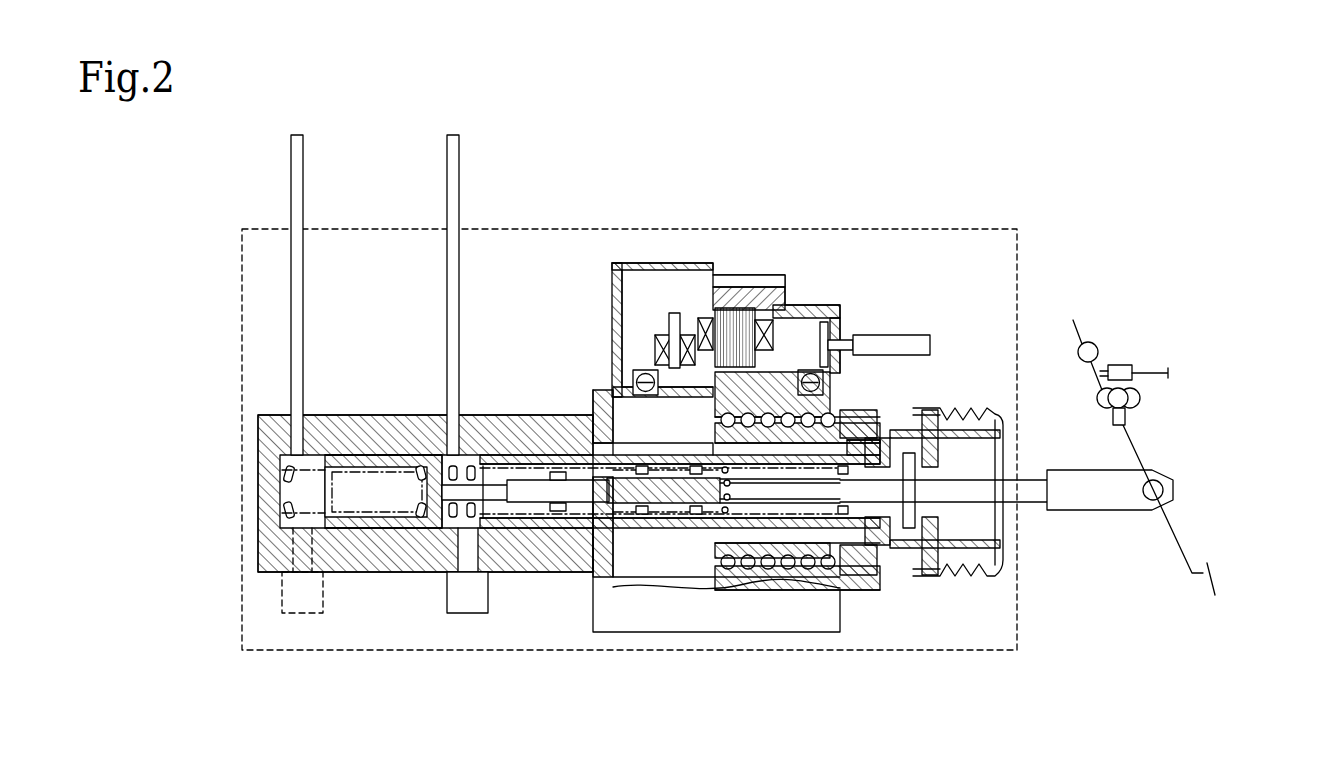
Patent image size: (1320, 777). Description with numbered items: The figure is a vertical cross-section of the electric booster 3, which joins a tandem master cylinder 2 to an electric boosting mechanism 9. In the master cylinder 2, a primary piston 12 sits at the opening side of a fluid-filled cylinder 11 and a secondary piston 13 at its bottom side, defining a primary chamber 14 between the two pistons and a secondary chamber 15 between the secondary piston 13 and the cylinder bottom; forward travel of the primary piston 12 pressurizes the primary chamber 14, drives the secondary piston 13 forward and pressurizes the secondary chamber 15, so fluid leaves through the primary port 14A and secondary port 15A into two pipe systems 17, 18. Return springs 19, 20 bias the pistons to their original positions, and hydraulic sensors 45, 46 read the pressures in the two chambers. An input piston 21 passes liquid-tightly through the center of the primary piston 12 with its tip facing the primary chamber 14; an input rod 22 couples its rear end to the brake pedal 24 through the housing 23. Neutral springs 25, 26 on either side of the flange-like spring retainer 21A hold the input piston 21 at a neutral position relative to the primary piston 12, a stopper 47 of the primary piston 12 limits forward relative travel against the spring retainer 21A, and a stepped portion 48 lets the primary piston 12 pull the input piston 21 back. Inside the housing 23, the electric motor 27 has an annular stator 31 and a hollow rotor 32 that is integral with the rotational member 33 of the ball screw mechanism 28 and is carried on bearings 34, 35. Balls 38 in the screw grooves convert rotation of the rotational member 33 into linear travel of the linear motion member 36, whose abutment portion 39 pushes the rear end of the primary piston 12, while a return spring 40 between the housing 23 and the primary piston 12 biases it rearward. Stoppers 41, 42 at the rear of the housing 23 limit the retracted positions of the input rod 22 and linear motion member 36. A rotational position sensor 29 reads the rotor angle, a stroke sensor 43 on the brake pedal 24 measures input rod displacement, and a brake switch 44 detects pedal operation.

The master cylinder 2 is at (380, 410).
The electric booster 3 is at (795, 226).
The electric boosting mechanism 9 is at (677, 262).
The cylinder 11 is at (513, 431).
The primary piston 12 is at (562, 540).
The secondary piston 13 is at (440, 526).
The primary chamber 14 is at (510, 535).
The primary port 14A is at (477, 456).
The secondary chamber 15 is at (352, 530).
The secondary port 15A is at (296, 440).
The pipe system 17 is at (447, 175).
The pipe system 18 is at (291, 163).
The return spring 19 is at (483, 470).
The return spring 20 is at (285, 466).
The input piston 21 is at (688, 520).
The spring retainer 21A is at (693, 520).
The input rod 22 is at (968, 490).
The housing 23 is at (800, 385).
The brake pedal 24 is at (1203, 575).
The neutral spring 25 is at (628, 522).
The neutral spring 26 is at (760, 542).
The electric motor 27 is at (736, 268).
The ball screw mechanism 28 is at (840, 407).
The rotational position sensor 29 is at (669, 330).
The stator 31 is at (756, 287).
The rotor 32 is at (742, 310).
The rotational member 33 is at (773, 335).
The bearing 34 is at (640, 375).
The bearing 35 is at (830, 395).
The linear motion member 36 is at (855, 430).
The balls 38 is at (870, 430).
The abutment portion 39 is at (900, 410).
The return spring 40 is at (815, 582).
The stopper 41 is at (930, 576).
The stopper 42 is at (905, 530).
The stroke sensor 43 is at (1140, 398).
The brake switch 44 is at (1120, 365).
The hydraulic sensor 45 is at (470, 614).
The hydraulic sensor 46 is at (300, 614).
The stopper 47 is at (780, 572).
The stepped portion 48 is at (668, 520).